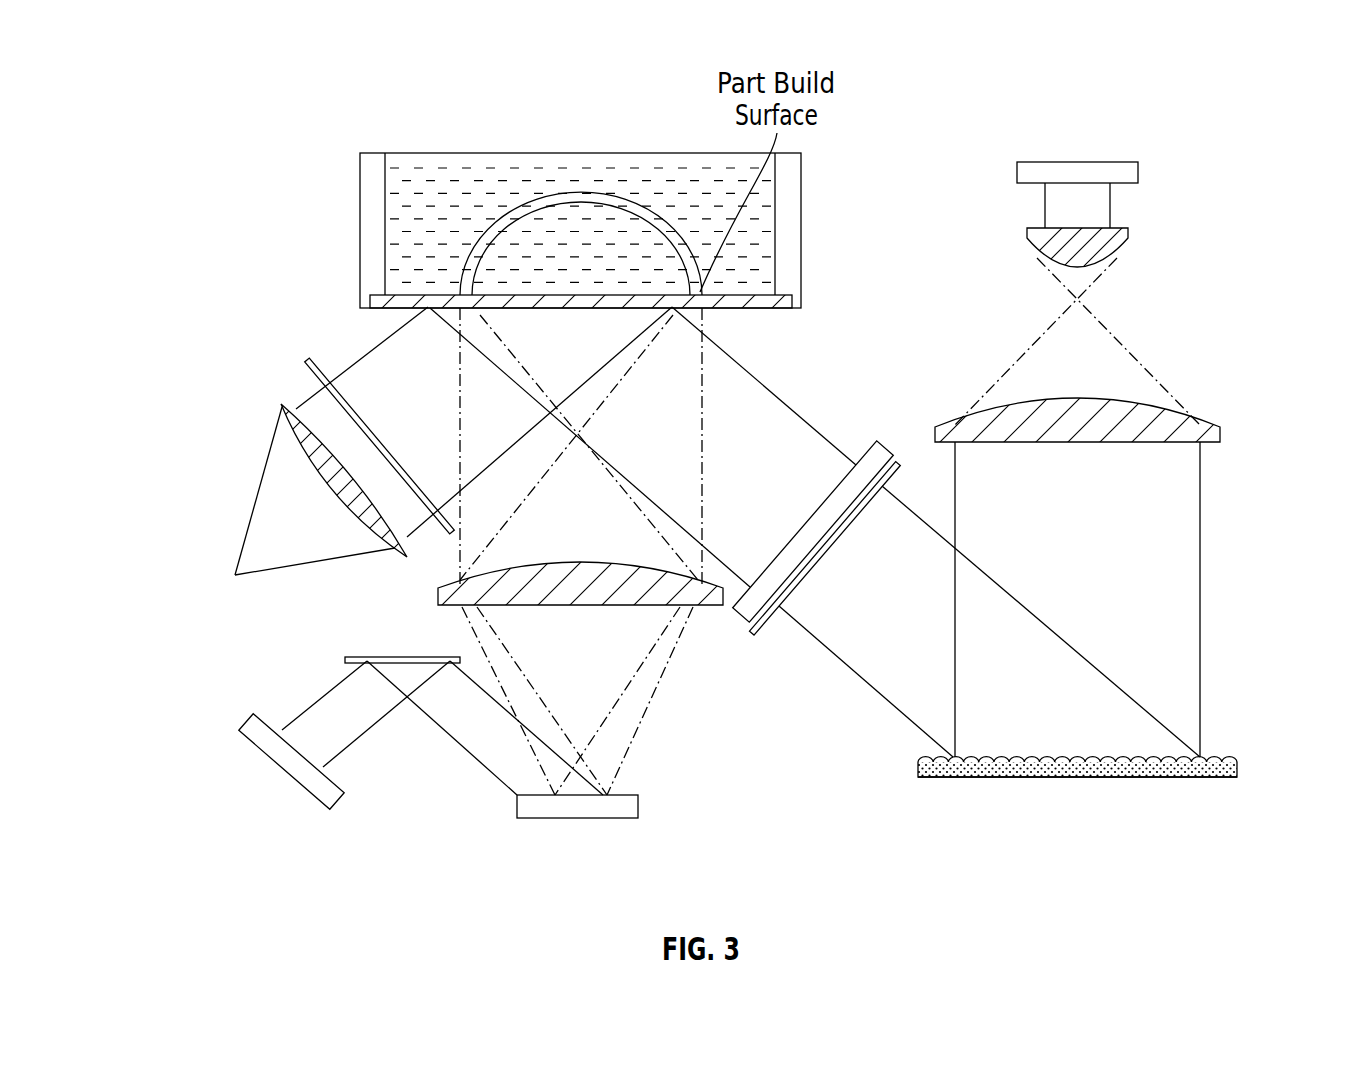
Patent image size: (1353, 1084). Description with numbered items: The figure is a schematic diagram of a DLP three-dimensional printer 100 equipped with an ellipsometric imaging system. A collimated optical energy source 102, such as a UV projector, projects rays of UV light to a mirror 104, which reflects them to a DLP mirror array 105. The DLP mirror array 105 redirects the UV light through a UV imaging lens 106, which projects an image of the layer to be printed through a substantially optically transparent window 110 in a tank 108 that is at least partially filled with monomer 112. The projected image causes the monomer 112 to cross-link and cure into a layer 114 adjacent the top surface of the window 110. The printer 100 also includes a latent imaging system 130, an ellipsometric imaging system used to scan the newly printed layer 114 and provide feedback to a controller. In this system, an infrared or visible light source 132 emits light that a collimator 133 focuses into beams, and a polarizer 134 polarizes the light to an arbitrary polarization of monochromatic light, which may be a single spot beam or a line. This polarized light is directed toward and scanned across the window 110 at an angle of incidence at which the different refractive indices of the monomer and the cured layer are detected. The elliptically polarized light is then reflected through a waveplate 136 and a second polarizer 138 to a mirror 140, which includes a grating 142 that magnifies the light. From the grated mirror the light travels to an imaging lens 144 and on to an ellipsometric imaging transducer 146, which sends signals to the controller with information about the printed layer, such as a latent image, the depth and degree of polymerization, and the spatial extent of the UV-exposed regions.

The printer 100 is at (133, 73).
The collimated optical energy source 102 is at (283, 770).
The mirror 104 is at (345, 660).
The DLP mirror array 105 is at (577, 820).
The UV imaging lens 106 is at (707, 606).
The tank 108 is at (803, 168).
The substantially optically transparent window 110 is at (792, 300).
The monomer 112 is at (662, 183).
The layer 114 is at (467, 290).
The latent imaging system 130 is at (1192, 334).
The infrared or visible light source 132 is at (135, 578).
The collimator 133 is at (280, 408).
The polarizer 134 is at (307, 363).
The waveplate 136 is at (868, 446).
The second polarizer 138 is at (899, 462).
The mirror 140 is at (1082, 777).
The grating 142 is at (1238, 760).
The imaging lens 144 is at (1220, 438).
The ellipsometric imaging transducer 146 is at (1178, 192).